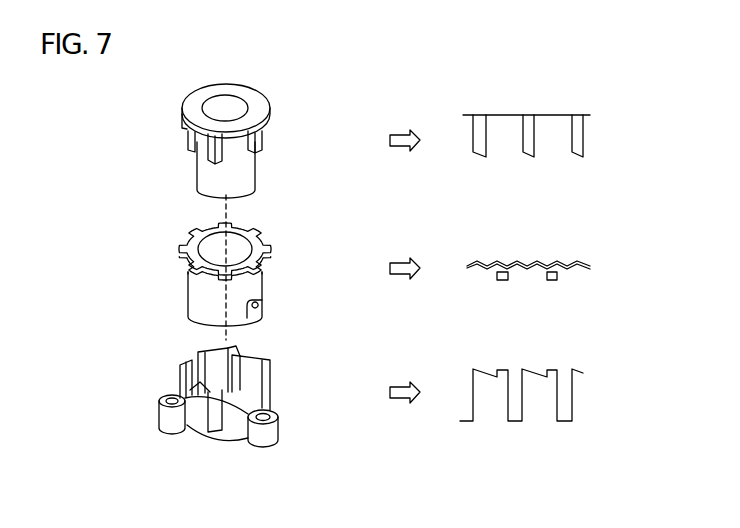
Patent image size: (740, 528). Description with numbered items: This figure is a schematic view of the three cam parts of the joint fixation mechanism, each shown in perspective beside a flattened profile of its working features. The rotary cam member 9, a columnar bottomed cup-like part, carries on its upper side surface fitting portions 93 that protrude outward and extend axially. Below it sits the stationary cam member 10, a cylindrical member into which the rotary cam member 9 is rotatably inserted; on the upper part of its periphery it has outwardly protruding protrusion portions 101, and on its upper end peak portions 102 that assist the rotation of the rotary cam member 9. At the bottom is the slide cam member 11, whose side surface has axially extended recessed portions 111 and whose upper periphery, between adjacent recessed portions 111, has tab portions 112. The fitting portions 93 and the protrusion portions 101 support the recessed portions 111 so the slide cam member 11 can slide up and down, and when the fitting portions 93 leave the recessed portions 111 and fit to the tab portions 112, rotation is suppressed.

The rotary cam member 9 is at (177, 167).
The fitting portions 93 is at (257, 150).
The stationary cam member 10 is at (177, 286).
The peak portions 102 is at (258, 228).
The protrusion portions 101 is at (260, 276).
The slide cam member 11 is at (175, 369).
The recessed portions 111 is at (170, 400).
The tab portions 112 is at (258, 403).